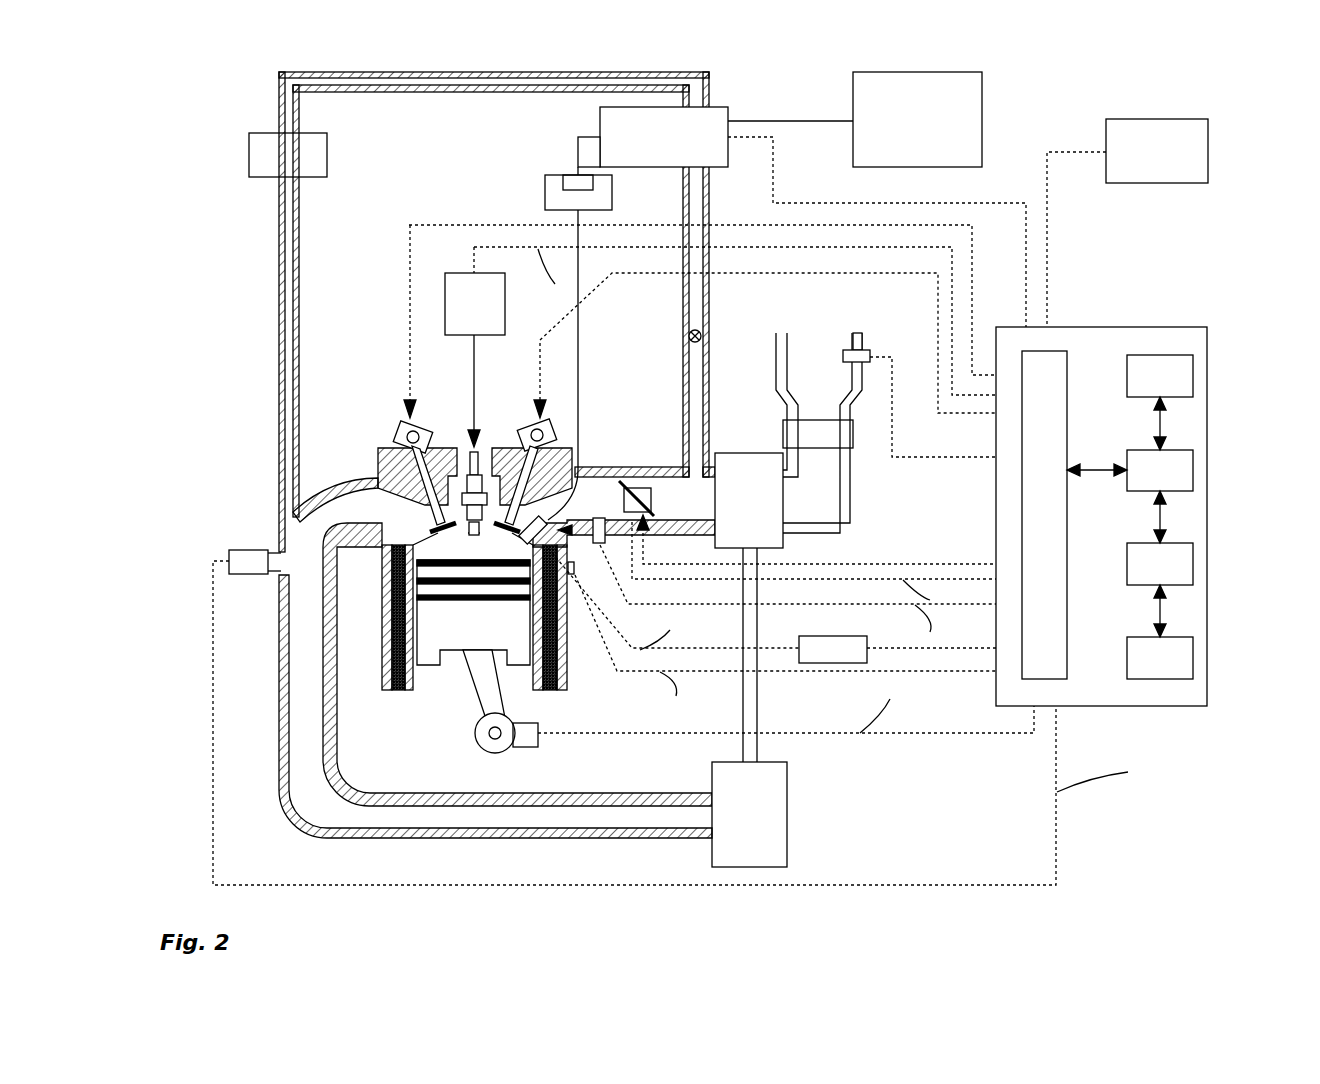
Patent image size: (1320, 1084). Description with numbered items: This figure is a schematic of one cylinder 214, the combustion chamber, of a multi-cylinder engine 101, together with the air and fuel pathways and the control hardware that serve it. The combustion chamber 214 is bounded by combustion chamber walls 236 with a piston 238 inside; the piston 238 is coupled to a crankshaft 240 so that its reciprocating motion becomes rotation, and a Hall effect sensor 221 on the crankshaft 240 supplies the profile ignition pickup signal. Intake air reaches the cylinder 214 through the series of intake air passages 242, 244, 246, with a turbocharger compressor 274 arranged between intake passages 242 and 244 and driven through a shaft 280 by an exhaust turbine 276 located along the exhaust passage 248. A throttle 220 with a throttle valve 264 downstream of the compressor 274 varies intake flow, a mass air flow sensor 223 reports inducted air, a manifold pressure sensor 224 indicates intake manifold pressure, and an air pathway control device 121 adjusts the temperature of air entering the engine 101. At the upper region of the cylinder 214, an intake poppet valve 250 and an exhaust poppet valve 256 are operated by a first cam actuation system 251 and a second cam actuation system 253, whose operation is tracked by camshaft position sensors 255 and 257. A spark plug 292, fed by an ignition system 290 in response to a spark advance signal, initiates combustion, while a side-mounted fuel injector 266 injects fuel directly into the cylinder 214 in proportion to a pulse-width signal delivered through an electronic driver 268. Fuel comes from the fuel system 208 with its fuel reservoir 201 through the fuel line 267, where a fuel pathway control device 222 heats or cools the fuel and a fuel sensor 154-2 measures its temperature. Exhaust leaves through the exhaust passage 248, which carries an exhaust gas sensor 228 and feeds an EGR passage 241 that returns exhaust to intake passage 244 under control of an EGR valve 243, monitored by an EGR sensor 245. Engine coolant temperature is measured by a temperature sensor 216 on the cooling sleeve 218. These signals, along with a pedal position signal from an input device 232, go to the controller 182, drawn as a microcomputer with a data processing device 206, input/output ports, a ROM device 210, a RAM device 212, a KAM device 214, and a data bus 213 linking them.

The engine 101 is at (211, 108).
The EGR sensor 245 is at (320, 152).
The fuel system 208 is at (600, 122).
The fuel line 267 is at (578, 149).
The fuel sensor 154-2 is at (560, 184).
The fuel pathway control device 222 is at (583, 197).
The fuel reservoir 201 is at (855, 119).
The input device 232 is at (1124, 235).
The EGR passage 241 is at (705, 212).
The ignition system 290 is at (475, 347).
The EGR valve 243 is at (699, 330).
The mass air flow sensor 223 is at (864, 348).
The intake air passage 242 is at (819, 433).
The air pathway control device 121 is at (818, 434).
The camshaft position sensor 257 is at (400, 430).
The second cam actuation system 253 is at (425, 428).
The first cam actuation system 251 is at (525, 428).
The intake poppet valve 250 is at (482, 470).
The spark plug 292 is at (470, 470).
The camshaft position sensor 255 is at (578, 385).
The fuel injector 266 is at (548, 518).
The throttle valve 264 is at (635, 488).
The throttle 220 is at (650, 487).
The compressor 274 is at (746, 470).
The exhaust poppet valve 256 is at (398, 505).
The intake air passage 246 is at (799, 534).
The intake air passage 244 is at (624, 515).
The exhaust gas sensor 228 is at (240, 550).
The exhaust passage 248 is at (297, 585).
The manifold pressure sensor 224 is at (607, 535).
The cylinder 214 is at (398, 592).
The combustion chamber walls 236 is at (462, 663).
The piston 238 is at (445, 632).
The crankshaft 240 is at (490, 742).
The Hall effect sensor 221 is at (535, 746).
The cooling sleeve 218 is at (548, 660).
The temperature sensor 216 is at (575, 582).
The electronic driver 268 is at (784, 605).
The exhaust turbine 276 is at (720, 852).
The shaft 280 is at (752, 740).
The controller 182 is at (1149, 487).
The ROM device 210 is at (1193, 370).
The data processing device 206 is at (1193, 462).
The RAM device 212 is at (1193, 557).
The data bus 213 is at (1095, 472).